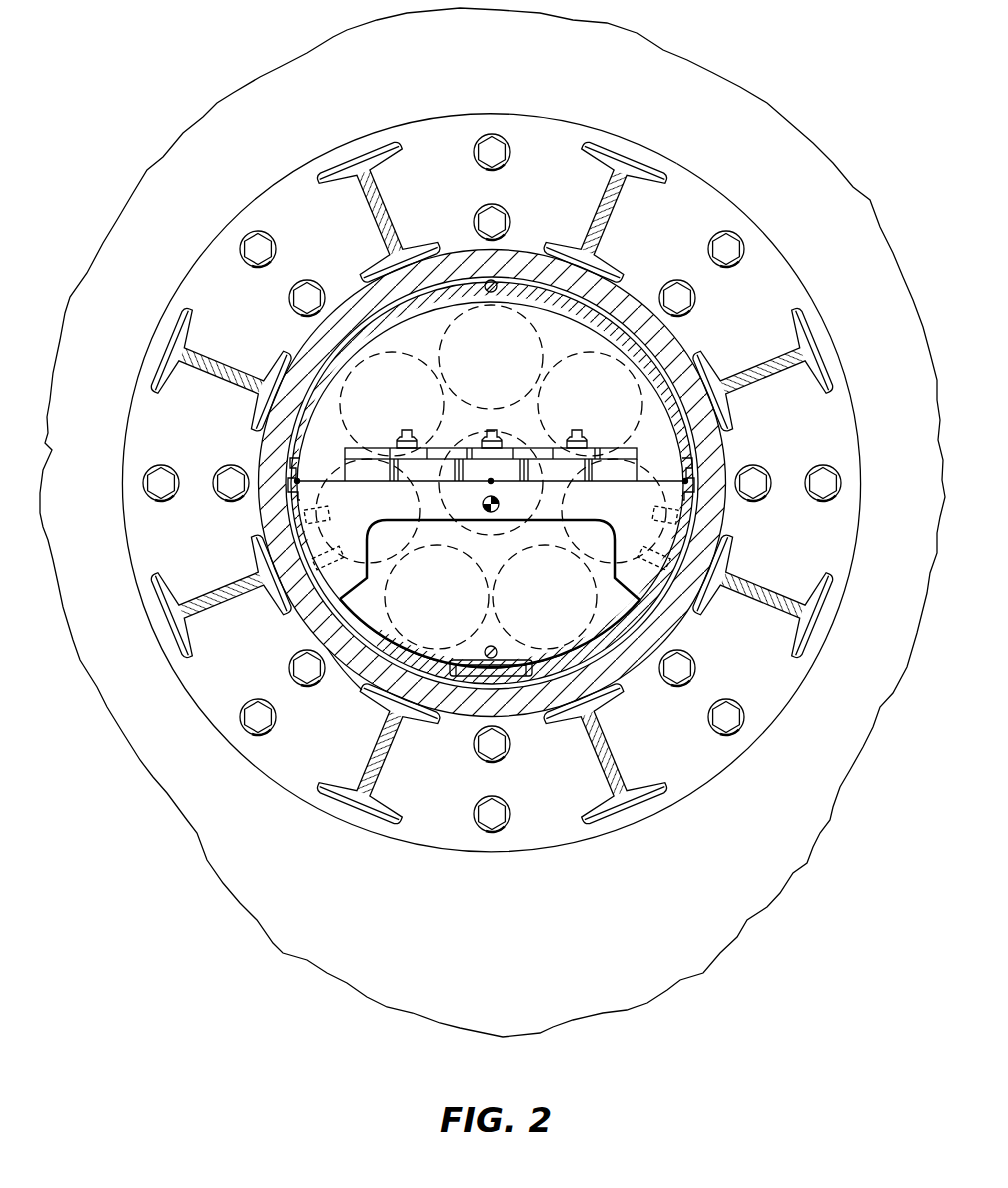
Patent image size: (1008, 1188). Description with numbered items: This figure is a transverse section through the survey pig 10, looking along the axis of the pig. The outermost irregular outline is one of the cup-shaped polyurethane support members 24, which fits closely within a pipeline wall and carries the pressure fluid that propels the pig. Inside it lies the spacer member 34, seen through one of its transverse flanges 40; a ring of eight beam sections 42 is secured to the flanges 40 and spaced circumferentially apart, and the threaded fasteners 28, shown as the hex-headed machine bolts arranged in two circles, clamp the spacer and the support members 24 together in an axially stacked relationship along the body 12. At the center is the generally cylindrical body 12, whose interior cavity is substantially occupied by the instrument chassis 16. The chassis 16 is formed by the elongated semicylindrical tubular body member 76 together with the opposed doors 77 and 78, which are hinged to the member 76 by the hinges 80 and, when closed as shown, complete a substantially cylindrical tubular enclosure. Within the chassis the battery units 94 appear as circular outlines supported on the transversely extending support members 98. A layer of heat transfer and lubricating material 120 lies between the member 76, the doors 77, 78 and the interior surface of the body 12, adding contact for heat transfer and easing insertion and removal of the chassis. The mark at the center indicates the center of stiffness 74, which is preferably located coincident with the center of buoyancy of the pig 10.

The survey pig 10 is at (766, 56).
The body 12 is at (732, 446).
The instrument chassis 16 is at (613, 308).
The support members 24 is at (605, 22).
The threaded fasteners 28 is at (163, 492).
The spacer member 34 is at (656, 148).
The transverse flanges 40 is at (422, 136).
The beam sections 42 is at (378, 214).
The center of stiffness 74 is at (498, 505).
The tubular body member 76 is at (476, 686).
The door 77 is at (335, 339).
The door 78 is at (648, 358).
The hinges 80 is at (688, 487).
The battery units 94 is at (506, 347).
The support members 98 is at (437, 470).
The heat transfer and lubricating material 120 is at (352, 668).